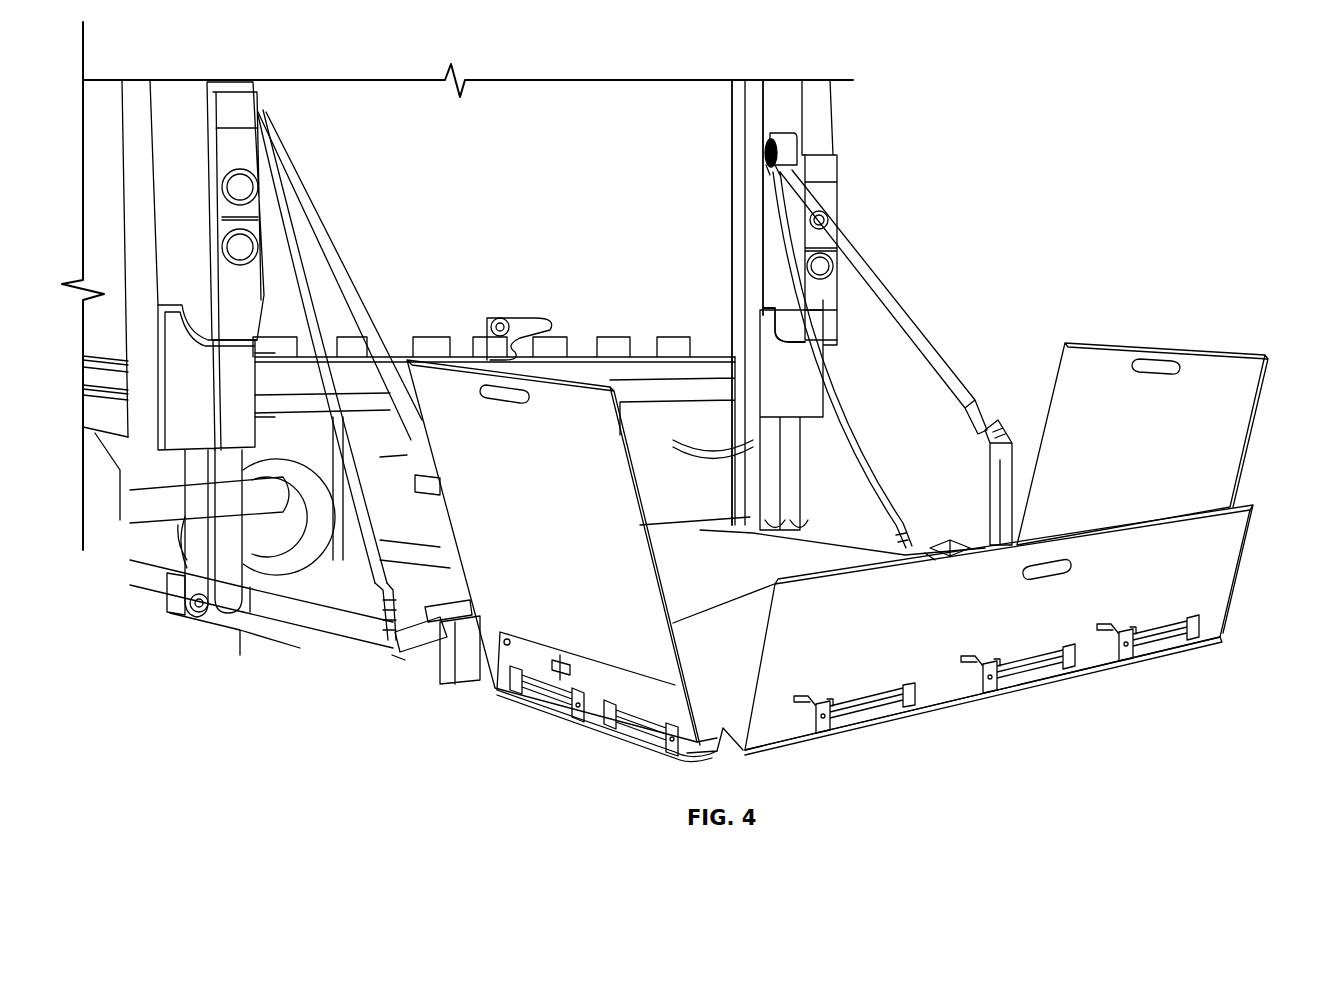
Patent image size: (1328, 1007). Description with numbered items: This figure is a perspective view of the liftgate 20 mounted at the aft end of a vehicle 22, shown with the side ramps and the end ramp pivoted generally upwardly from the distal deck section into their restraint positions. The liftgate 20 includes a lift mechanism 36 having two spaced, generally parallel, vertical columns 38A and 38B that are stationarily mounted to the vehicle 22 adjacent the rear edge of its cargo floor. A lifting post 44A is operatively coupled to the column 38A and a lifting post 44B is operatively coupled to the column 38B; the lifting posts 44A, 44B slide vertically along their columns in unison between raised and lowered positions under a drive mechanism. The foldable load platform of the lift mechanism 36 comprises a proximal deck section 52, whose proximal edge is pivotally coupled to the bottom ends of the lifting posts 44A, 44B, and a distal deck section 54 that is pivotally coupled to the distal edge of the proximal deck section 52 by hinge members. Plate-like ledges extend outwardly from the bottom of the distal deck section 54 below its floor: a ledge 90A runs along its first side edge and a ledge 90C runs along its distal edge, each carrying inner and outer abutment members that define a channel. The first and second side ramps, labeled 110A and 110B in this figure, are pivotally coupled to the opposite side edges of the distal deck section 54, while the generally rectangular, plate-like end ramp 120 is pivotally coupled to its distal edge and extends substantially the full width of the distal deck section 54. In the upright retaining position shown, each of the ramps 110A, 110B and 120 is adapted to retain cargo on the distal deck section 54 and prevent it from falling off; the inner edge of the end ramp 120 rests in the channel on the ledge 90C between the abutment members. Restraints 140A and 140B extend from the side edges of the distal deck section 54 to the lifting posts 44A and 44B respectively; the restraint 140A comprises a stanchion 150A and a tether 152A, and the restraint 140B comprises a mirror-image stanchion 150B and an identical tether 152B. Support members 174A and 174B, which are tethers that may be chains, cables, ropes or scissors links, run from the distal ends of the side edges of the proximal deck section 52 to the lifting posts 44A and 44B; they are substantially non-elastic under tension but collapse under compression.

The liftgate 20 is at (1034, 242).
The vehicle 22 is at (633, 68).
The lift mechanism 36 is at (846, 122).
The column 38A is at (186, 96).
The column 38B is at (820, 100).
The lifting post 44A is at (200, 517).
The lifting post 44B is at (775, 242).
The proximal deck section 52 is at (330, 603).
The distal deck section 54 is at (720, 707).
The ledge 90A is at (630, 740).
The ledge 90C is at (963, 703).
The first side panel 110A is at (640, 579).
The second side panel 110B is at (1236, 452).
The end ramp 120 is at (1223, 585).
The restraint 140A is at (365, 266).
The restraint 140B is at (937, 329).
The stanchion 150A is at (460, 594).
The stanchion 150B is at (998, 492).
The tether 152A is at (335, 252).
The tether 152B is at (897, 310).
The support member 174A is at (383, 613).
The support member 174B is at (868, 438).